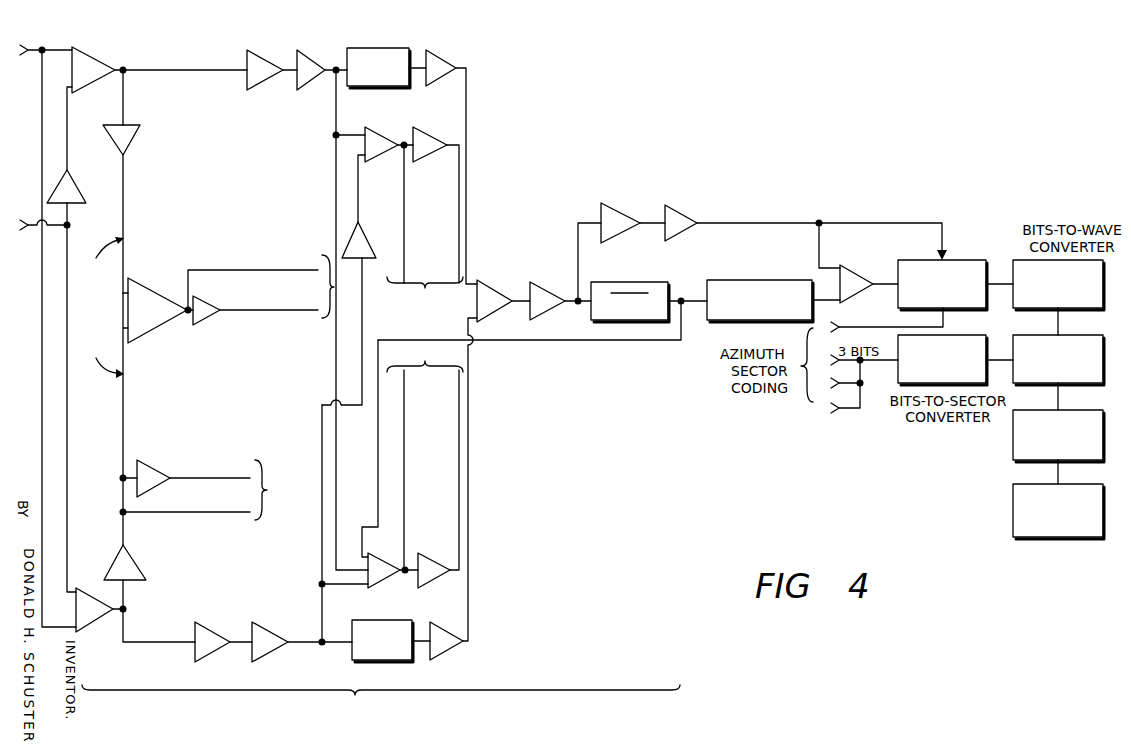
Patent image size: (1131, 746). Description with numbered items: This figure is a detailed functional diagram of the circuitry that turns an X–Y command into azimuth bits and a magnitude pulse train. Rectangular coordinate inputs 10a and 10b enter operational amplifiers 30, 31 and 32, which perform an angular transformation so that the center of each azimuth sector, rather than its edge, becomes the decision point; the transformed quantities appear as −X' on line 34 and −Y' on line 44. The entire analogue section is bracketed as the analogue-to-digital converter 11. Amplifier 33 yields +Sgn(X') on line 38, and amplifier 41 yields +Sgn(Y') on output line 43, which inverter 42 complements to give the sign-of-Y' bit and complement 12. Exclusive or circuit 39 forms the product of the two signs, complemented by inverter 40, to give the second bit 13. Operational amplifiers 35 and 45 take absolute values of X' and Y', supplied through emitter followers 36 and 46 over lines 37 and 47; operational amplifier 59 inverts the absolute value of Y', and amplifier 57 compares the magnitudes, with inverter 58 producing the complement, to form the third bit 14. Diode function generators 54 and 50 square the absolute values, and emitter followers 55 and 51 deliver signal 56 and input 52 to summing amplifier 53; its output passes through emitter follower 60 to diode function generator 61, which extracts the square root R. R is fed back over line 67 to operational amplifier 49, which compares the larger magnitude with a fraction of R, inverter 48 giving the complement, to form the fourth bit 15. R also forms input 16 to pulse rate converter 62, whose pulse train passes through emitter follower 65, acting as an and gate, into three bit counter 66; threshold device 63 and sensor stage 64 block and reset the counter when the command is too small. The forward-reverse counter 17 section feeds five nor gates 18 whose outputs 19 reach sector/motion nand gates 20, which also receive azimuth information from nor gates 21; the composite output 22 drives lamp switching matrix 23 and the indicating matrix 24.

The X input 10a is at (18, 70).
The Y input 10b is at (24, 214).
The analogue-to-digital converter 11 is at (381, 705).
The azimuth information bit 12 is at (268, 490).
The azimuth information bit 13 is at (328, 254).
The azimuth information bit 14 is at (427, 290).
The azimuth information bit 15 is at (426, 363).
The pulse train output 16 is at (699, 304).
The forward-reverse counter 17 is at (763, 189).
The nor gates 18 is at (1099, 309).
The outputs of nor gates 19 is at (1050, 322).
The sector/motion nand gates 20 is at (1104, 376).
The azimuth sector nor gates 21 is at (960, 335).
The composite logic output information 22 is at (1060, 397).
The lamp switching matrix 23 is at (1096, 461).
The indicating matrix 24 is at (1098, 538).
The operational amplifier 30 is at (88, 591).
The operational amplifier 31 is at (79, 191).
The operational amplifier 32 is at (98, 62).
The amplifier 33 is at (135, 140).
The line 34 is at (189, 67).
The operational amplifier 35 is at (268, 52).
The emitter follower 36 is at (312, 52).
The line 37 is at (335, 191).
The line 38 is at (115, 253).
The exclusive or circuit 39 is at (147, 284).
The inverter 40 is at (205, 294).
The amplifier 41 is at (142, 568).
The inverter 42 is at (151, 466).
The output line 43 is at (127, 403).
The line 44 is at (147, 641).
The operational amplifier 45 is at (214, 629).
The emitter follower 46 is at (273, 628).
The line 47 is at (320, 422).
The inverter 48 is at (436, 582).
The operational amplifier 49 is at (378, 582).
The diode function generator 50 is at (362, 620).
The emitter follower 51 is at (441, 624).
The input 52 is at (468, 500).
The summing amplifier 53 is at (485, 285).
The diode function generator 54 is at (396, 48).
The emitter follower 55 is at (446, 57).
The signal 56 is at (466, 105).
The amplifier 57 is at (380, 131).
The inverter 58 is at (428, 131).
The operational amplifier 59 is at (357, 225).
The emitter follower 60 is at (539, 283).
The diode function generator 61 is at (648, 282).
The pulse rate converter 62 is at (775, 280).
The threshold device 63 is at (620, 212).
The threshold sensor stage 64 is at (686, 212).
The emitter follower 65 is at (852, 272).
The counter 66 is at (927, 259).
The line 67 is at (406, 482).